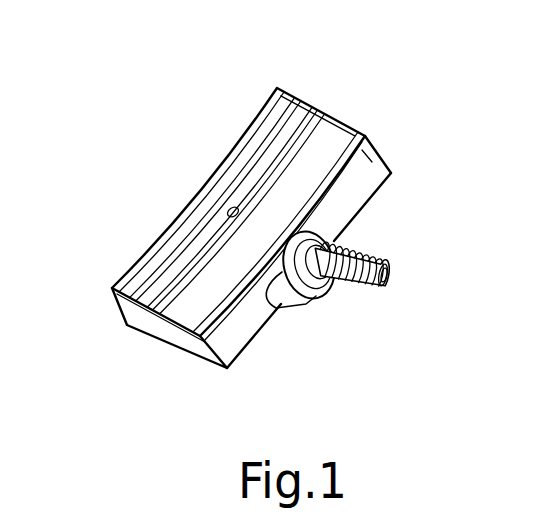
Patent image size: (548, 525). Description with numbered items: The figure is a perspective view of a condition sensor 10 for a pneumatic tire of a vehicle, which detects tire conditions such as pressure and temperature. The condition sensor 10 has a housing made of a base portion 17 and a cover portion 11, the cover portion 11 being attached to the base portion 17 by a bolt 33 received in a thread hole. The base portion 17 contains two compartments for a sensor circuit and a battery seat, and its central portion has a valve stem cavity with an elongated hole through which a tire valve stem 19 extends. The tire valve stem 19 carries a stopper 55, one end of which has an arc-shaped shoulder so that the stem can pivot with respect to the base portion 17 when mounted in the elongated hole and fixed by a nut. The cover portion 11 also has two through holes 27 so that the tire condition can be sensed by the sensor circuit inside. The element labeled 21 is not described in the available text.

The condition sensor 10 is at (100, 92).
The cover portion 11 is at (317, 127).
The base portion 17 is at (368, 170).
The tire valve stem 19 is at (372, 252).
The flange 21 is at (318, 293).
The through holes 27 is at (190, 288).
The bolt 33 is at (230, 212).
The stopper 55 is at (271, 277).